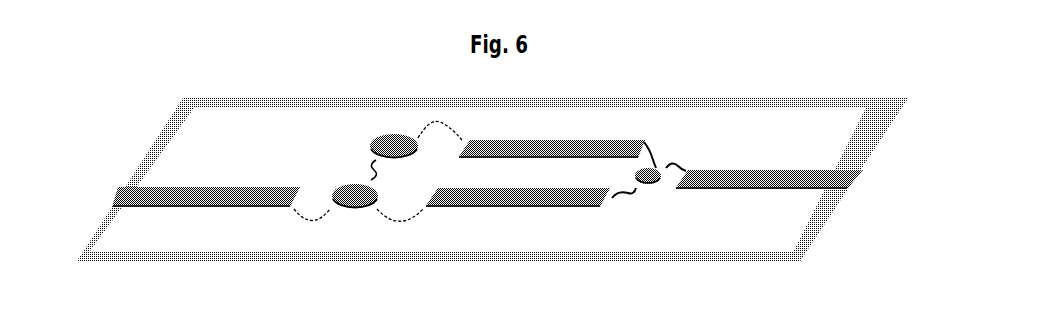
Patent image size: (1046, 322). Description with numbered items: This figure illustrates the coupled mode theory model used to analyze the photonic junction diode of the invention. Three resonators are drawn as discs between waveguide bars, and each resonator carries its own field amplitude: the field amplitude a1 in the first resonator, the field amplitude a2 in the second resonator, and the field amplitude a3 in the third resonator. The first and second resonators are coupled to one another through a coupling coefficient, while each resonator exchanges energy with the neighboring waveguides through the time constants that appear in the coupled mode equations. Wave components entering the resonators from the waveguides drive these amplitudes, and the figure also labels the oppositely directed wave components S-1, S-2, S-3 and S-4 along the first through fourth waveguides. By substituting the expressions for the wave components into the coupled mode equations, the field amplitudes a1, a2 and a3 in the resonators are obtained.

The outgoing wave amplitude in first waveguide S-1 is at (168, 217).
The outgoing wave amplitude in second waveguide S-2 is at (548, 178).
The outgoing wave amplitude in third waveguide S-3 is at (576, 129).
The outgoing wave amplitude in fourth waveguide S-4 is at (739, 160).
The field amplitude in first resonator a1 is at (352, 242).
The field amplitude in second resonator a2 is at (404, 102).
The field amplitude in third resonator a3 is at (650, 220).